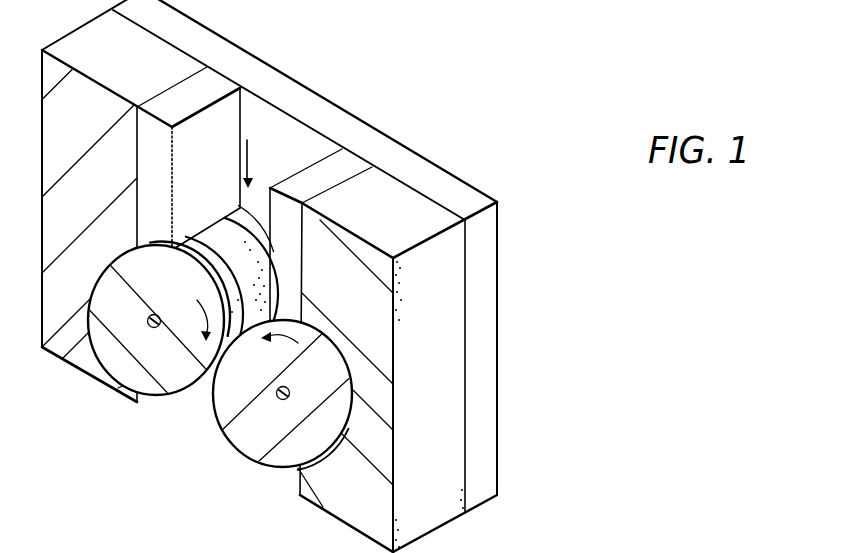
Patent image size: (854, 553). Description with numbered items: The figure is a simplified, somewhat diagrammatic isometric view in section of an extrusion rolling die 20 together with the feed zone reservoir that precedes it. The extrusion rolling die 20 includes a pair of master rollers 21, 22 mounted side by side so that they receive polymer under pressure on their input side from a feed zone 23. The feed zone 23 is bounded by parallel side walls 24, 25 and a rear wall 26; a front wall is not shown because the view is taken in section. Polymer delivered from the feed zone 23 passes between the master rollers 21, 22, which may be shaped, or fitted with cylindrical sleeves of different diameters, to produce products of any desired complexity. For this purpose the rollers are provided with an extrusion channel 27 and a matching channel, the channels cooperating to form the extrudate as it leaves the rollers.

The extrusion rolling die 20 is at (276, 276).
The master roller 21 is at (163, 288).
The master roller 22 is at (262, 383).
The feed zone 23 is at (265, 155).
The side wall 24 is at (188, 152).
The side wall 25 is at (322, 237).
The rear wall 26 is at (333, 276).
The extrusion channel 27 is at (202, 258).